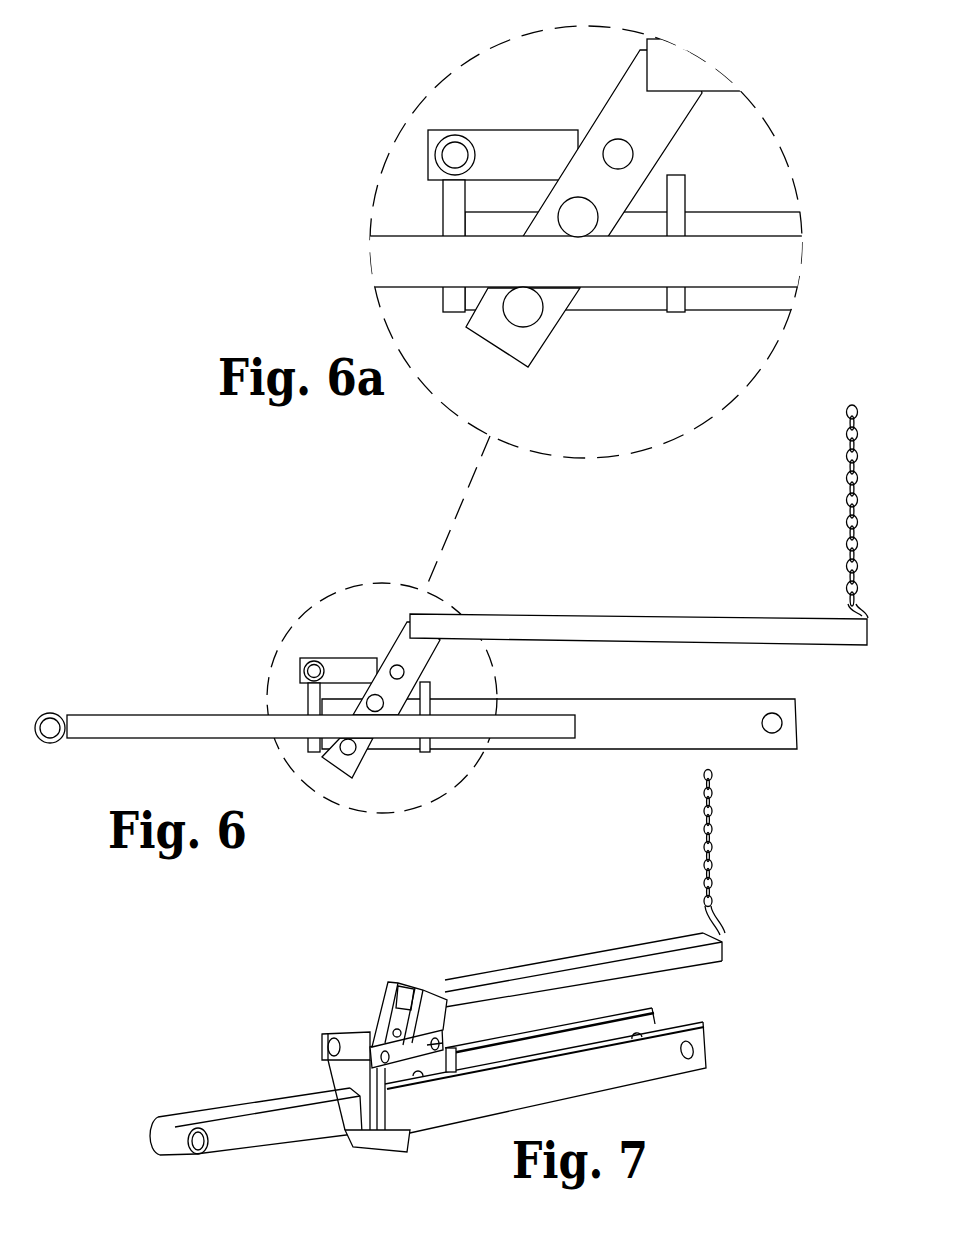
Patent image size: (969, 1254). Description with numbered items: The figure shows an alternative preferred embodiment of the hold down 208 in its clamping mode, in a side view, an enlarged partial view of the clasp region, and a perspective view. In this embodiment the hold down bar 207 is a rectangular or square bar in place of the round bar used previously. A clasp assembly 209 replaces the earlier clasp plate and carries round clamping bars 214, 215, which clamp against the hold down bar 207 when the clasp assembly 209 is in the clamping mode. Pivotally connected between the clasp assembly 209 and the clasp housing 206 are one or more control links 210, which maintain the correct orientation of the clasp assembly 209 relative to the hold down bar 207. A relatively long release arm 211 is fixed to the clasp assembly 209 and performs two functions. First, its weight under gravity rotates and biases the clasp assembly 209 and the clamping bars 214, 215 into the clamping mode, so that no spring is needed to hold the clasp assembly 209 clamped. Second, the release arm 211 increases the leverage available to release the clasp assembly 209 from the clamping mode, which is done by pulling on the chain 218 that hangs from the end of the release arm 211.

In FIG. 6A, the clasp housing 206 is at (752, 215).
In FIG. 6, the clasp housing 206 is at (692, 708).
In FIG. 7, the clasp housing 206 is at (570, 1033).
In FIG. 6A, the hold down bar 207 is at (467, 275).
In FIG. 6, the hold down bar 207 is at (107, 722).
In FIG. 7, the hold down bar 207 is at (248, 1130).
In FIG. 6, the hold down 208 is at (619, 531).
In FIG. 7, the hold down 208 is at (515, 906).
In FIG. 6A, the clasp assembly 209 is at (572, 82).
In FIG. 6, the clasp assembly 209 is at (358, 635).
In FIG. 7, the clasp assembly 209 is at (362, 988).
In FIG. 6A, the control link 210 is at (503, 142).
In FIG. 6, the control link 210 is at (333, 663).
In FIG. 7, the control link 210 is at (358, 1033).
In FIG. 6A, the release arm 211 is at (732, 58).
In FIG. 6, the release arm 211 is at (692, 623).
In FIG. 7, the release arm 211 is at (567, 973).
In FIG. 6A, the clamping bar 214 is at (525, 312).
In FIG. 6, the clamping bar 214 is at (353, 752).
In FIG. 7, the clamping bar 214 is at (410, 1132).
In FIG. 6A, the clamping bar 215 is at (588, 226).
In FIG. 6, the clamping bar 215 is at (378, 708).
In FIG. 7, the clamping bar 215 is at (420, 1073).
In FIG. 6, the chain 218 is at (850, 428).
In FIG. 7, the chain 218 is at (712, 838).